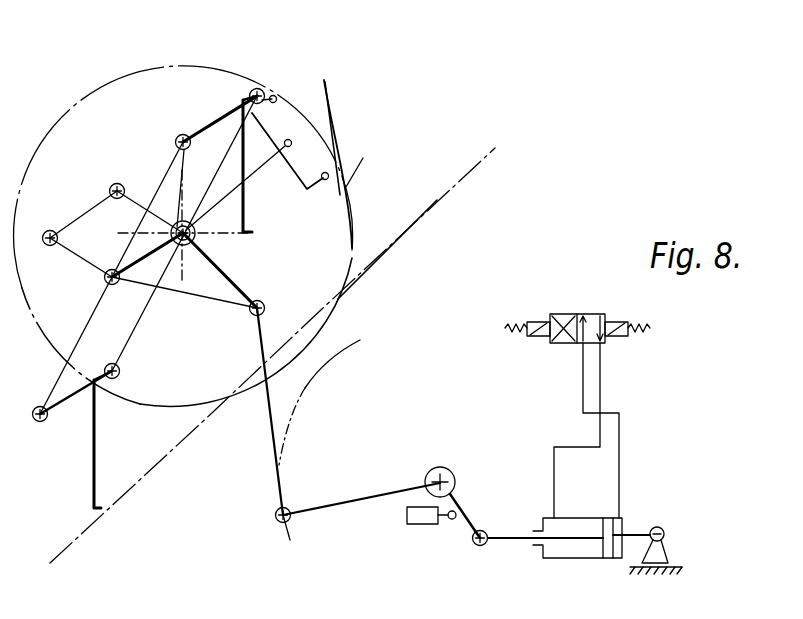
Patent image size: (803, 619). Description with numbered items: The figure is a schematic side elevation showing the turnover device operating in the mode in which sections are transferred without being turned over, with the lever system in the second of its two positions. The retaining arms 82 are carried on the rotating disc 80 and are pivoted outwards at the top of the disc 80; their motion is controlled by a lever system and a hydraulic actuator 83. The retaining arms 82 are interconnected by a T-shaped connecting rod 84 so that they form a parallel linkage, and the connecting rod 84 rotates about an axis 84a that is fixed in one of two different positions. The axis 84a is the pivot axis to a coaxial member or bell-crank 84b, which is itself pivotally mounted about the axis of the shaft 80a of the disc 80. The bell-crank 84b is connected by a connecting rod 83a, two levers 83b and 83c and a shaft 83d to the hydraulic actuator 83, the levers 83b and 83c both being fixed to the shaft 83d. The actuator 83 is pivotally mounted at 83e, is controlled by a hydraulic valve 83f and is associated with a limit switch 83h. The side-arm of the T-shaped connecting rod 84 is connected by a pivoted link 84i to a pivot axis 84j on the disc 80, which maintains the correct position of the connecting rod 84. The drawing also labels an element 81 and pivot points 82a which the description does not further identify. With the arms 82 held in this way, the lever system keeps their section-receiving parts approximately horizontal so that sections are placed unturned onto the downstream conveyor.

The disc 80 is at (196, 70).
The shaft of the disc 80a is at (175, 170).
The cam track / bell crank 81 is at (350, 122).
The retaining arms 82 is at (247, 220).
The pivot of support bar 82a is at (262, 90).
The hydraulic actuator 83 is at (592, 522).
The connecting rod 83a is at (267, 380).
The lever 83b is at (369, 493).
The lever 83c is at (472, 530).
The shaft 83d is at (452, 474).
The pivot mounting of the actuator 83e is at (664, 533).
The hydraulic valve 83f is at (600, 302).
The limit switch 83h is at (424, 525).
The T-shaped connecting rod 84 is at (76, 345).
The axis 84a is at (108, 280).
The bell-crank 84b is at (191, 297).
The pivoted link 84i is at (95, 213).
The pivot axis 84j is at (113, 184).